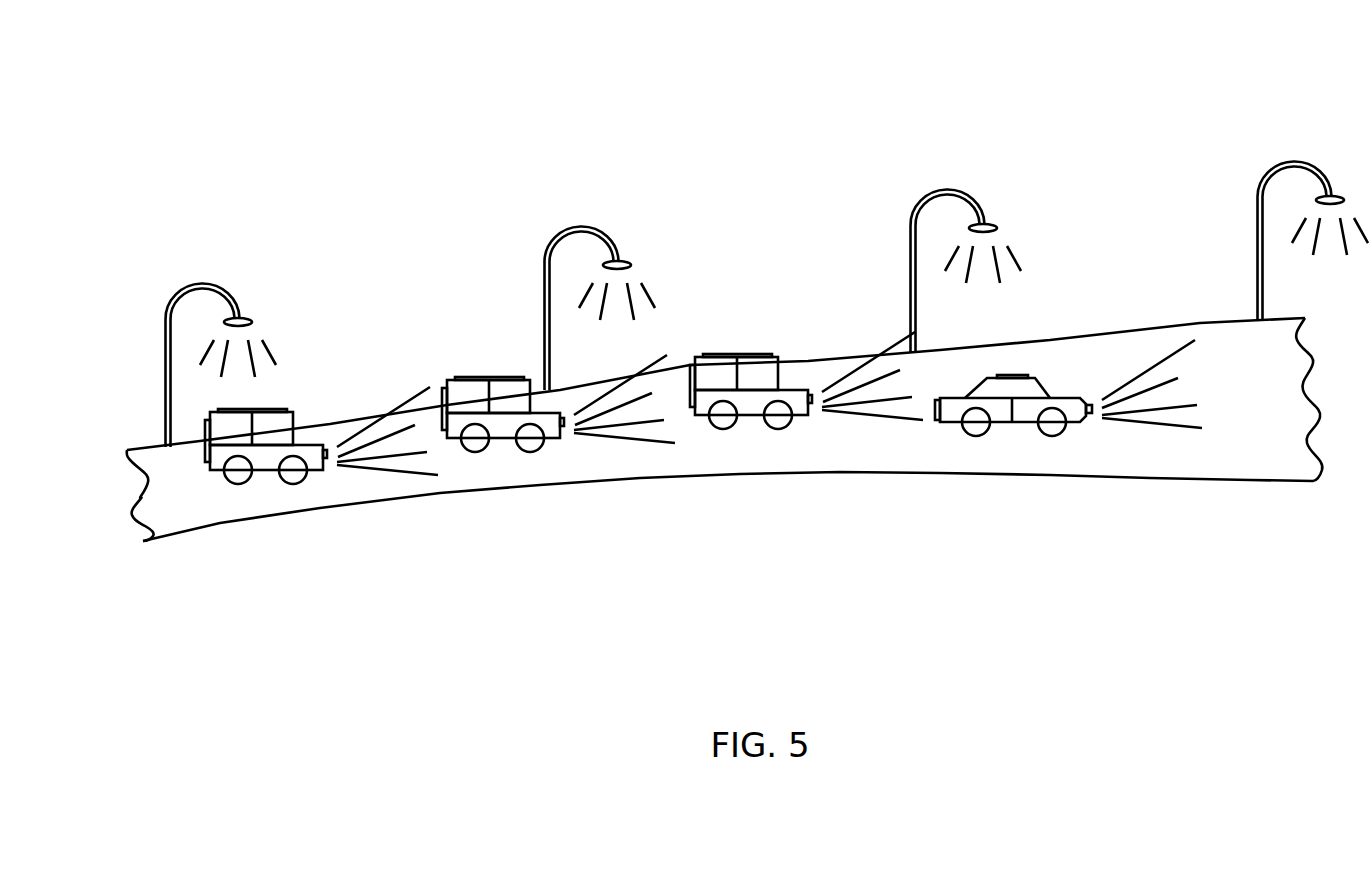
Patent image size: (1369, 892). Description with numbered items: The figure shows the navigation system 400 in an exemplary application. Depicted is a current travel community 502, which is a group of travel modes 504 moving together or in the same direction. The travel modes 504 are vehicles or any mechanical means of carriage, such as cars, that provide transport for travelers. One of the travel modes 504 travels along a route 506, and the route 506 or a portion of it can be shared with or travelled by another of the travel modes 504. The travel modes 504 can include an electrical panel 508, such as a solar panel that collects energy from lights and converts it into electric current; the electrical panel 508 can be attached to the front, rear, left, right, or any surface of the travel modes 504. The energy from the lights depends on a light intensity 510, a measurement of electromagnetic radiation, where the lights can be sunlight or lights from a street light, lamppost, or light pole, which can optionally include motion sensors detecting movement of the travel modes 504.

The navigation system 400 is at (181, 111).
The current travel community 502 is at (203, 571).
The travel modes 504 is at (275, 428).
The route 506 is at (1240, 378).
The electrical panel 508 is at (947, 383).
The light intensity 510 is at (835, 361).